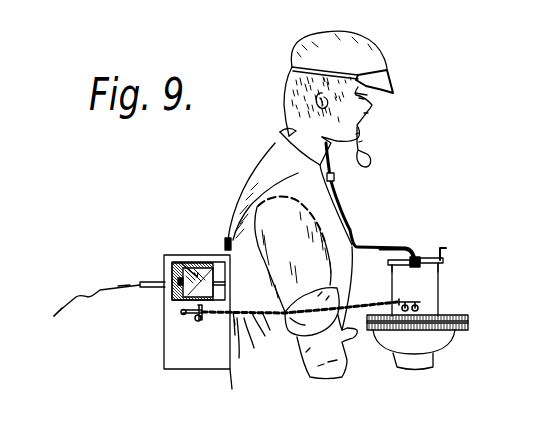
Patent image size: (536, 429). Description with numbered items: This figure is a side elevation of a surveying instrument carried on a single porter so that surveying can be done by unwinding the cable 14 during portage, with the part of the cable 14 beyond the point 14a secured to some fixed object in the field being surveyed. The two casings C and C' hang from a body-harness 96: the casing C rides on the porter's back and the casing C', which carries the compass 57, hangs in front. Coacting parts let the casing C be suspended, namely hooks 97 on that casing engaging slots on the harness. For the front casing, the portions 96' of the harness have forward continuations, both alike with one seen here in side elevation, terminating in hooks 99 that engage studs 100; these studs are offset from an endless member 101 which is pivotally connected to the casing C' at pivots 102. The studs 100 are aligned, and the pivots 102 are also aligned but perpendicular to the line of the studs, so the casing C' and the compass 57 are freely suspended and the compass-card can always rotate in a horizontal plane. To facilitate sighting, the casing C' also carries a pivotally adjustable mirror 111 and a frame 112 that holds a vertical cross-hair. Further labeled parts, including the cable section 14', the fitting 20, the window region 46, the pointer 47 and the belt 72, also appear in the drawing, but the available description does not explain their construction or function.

The cable 14 is at (97, 302).
The point on the cable 14a is at (55, 318).
The line section 14' is at (136, 302).
The tube coupling 20 is at (155, 281).
The window 46 is at (183, 293).
The indicator 47 is at (181, 263).
The compass 57 is at (448, 338).
The belt 72 is at (257, 332).
The body-harness 96 is at (263, 191).
The harness portions 96' is at (370, 201).
The hooks 97 is at (224, 243).
The hooks 99 is at (414, 259).
The studs 100 is at (407, 265).
The endless member 101 is at (390, 264).
The pivots 102 is at (390, 263).
The pivotally adjustable mirror 111 is at (388, 248).
The frame 112 is at (444, 250).
The casing C is at (195, 323).
The casing C' is at (423, 296).